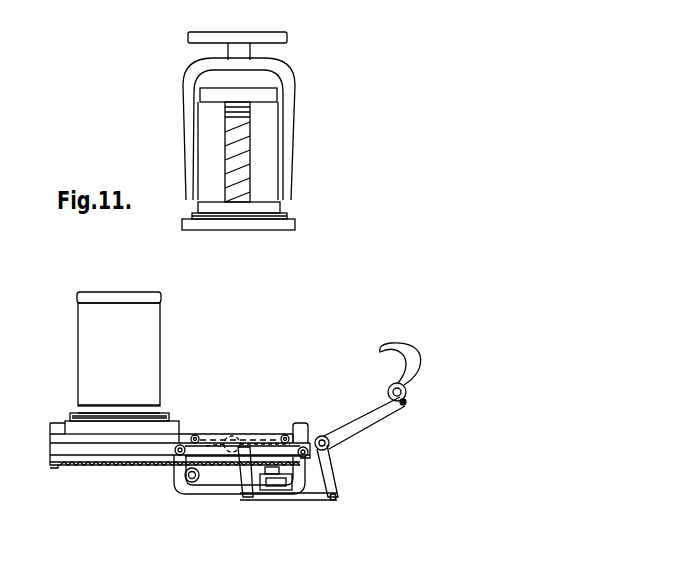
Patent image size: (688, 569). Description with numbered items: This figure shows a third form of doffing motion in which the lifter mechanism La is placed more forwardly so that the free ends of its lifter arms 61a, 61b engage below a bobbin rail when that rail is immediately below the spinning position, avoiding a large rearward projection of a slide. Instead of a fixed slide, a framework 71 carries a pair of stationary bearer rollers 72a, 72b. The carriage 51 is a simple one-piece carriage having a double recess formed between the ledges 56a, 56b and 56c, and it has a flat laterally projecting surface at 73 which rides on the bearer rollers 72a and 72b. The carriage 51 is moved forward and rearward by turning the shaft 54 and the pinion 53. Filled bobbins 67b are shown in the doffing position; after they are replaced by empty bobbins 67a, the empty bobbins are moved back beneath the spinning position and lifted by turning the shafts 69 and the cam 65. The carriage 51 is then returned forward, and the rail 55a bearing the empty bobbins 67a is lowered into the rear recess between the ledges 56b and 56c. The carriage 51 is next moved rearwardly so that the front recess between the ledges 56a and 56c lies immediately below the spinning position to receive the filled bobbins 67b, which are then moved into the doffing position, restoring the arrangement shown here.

The filled bobbins 67b is at (241, 160).
The rail 55a is at (280, 231).
The empty bobbins 67a is at (96, 350).
The ledge 56a is at (65, 437).
The ledge 56c is at (178, 430).
The lifter arm 61a is at (222, 433).
The ledge 56b is at (293, 430).
The lifter arm 61b is at (327, 431).
The cam 65 is at (405, 353).
The shaft 69 is at (411, 401).
The lifter mechanism La is at (380, 422).
The bearer roller 72b is at (312, 449).
The carriage 51 is at (100, 448).
The flat laterally projecting surface 73 is at (123, 443).
The bearer roller 72a is at (174, 453).
The shaft 54 is at (186, 480).
The framework 71 is at (197, 493).
The pinion 53 is at (217, 483).